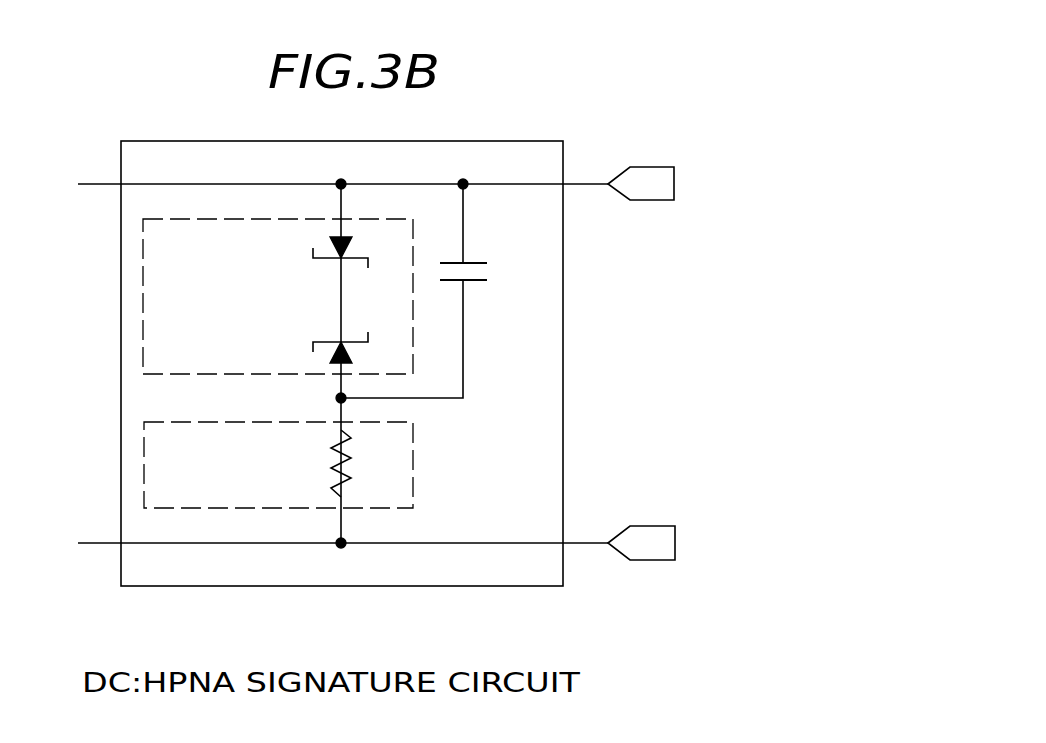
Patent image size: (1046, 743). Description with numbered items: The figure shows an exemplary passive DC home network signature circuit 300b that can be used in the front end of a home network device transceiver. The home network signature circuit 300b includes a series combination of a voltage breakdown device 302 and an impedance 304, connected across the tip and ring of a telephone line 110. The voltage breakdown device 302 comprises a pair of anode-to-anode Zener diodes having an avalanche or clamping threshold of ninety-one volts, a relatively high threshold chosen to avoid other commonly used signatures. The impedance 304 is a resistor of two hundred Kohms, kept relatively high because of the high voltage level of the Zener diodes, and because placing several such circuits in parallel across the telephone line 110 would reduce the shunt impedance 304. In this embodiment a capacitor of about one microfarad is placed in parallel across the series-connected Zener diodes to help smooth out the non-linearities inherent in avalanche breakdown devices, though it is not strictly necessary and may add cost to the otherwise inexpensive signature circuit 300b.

The telephone line 110 is at (585, 183).
The home network signature circuit 300b is at (394, 383).
The voltage breakdown device 302 is at (143, 322).
The impedance 304 is at (143, 468).